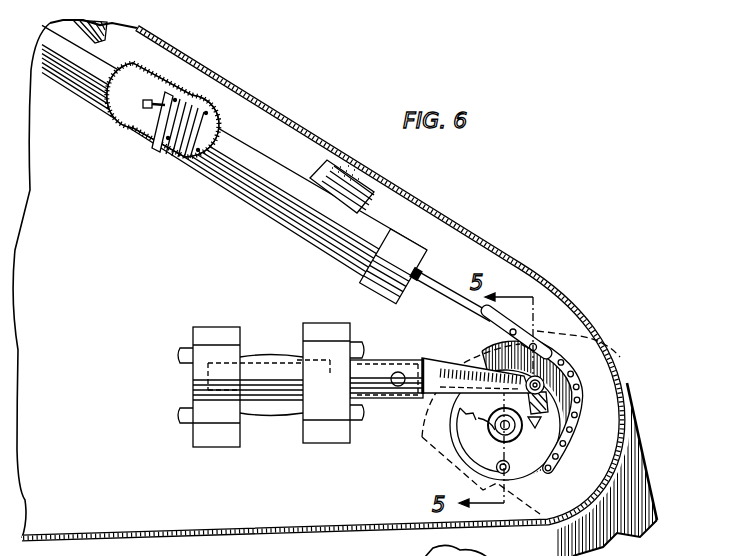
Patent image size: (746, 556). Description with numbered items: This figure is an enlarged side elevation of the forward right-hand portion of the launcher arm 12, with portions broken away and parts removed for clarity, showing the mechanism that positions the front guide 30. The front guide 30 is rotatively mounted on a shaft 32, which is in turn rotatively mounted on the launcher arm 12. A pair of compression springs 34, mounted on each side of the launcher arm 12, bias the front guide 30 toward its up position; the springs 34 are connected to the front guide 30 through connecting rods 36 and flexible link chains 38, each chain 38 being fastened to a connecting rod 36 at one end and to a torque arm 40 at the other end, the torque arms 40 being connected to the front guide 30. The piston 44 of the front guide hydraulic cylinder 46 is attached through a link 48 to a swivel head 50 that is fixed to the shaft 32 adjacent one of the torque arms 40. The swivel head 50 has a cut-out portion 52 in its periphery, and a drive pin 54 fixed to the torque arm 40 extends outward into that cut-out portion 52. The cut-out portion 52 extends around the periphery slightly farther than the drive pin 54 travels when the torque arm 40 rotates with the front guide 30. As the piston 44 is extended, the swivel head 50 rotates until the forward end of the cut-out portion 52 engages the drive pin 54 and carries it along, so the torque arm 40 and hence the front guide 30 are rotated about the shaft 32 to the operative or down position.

The launcher arm 12 is at (418, 200).
The front guide 30 is at (660, 489).
The shaft 32 is at (513, 425).
The compression springs 34 is at (200, 108).
The connecting rods 36 is at (437, 272).
The flexible link chains 38 is at (580, 378).
The torque arms 40 is at (513, 363).
The piston 44 is at (318, 370).
The front guide hydraulic cylinder 46 is at (263, 362).
The link 48 is at (427, 362).
The swivel head 50 is at (473, 410).
The cut-out portion 52 is at (490, 425).
The drive pin 54 is at (495, 467).